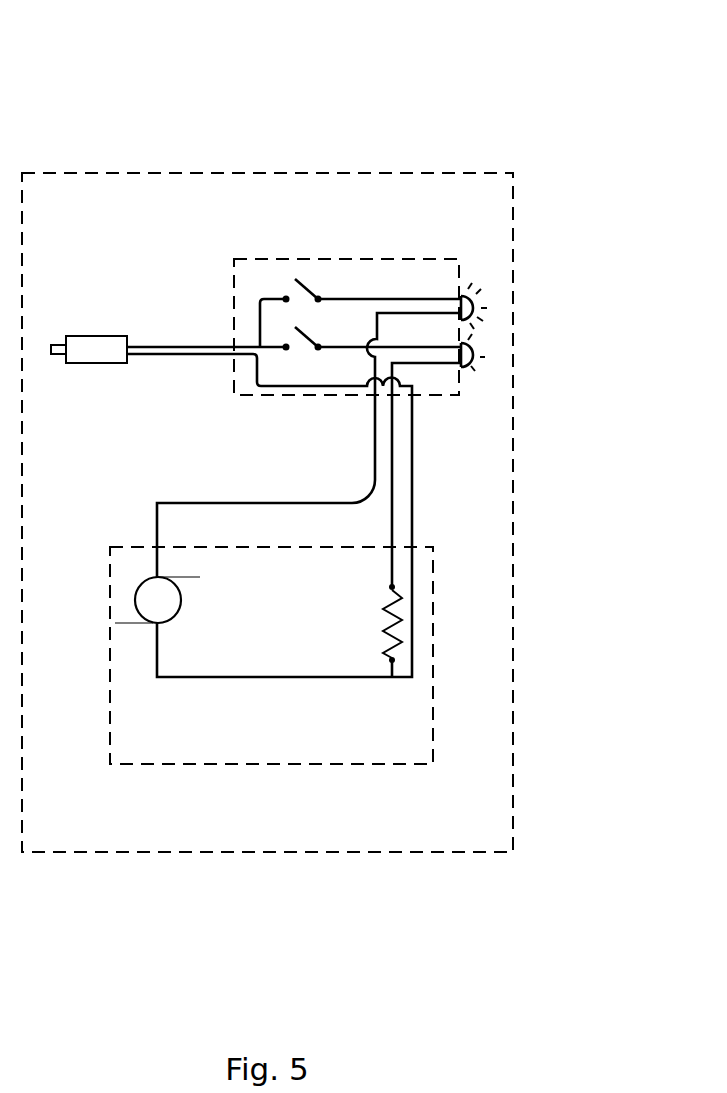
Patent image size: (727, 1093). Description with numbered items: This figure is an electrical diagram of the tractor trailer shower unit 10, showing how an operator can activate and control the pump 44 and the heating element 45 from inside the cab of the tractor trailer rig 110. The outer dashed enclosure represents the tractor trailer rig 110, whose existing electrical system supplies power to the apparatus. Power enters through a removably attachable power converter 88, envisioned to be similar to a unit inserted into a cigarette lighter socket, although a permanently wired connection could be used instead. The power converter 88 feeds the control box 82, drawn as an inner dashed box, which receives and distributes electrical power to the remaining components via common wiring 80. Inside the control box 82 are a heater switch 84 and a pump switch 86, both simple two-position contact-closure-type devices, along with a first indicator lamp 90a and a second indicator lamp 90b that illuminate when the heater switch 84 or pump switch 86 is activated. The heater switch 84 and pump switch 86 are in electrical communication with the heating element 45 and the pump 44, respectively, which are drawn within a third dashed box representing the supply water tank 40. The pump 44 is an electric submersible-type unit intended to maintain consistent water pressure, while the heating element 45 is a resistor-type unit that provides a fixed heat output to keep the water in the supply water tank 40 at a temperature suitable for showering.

The tractor trailer shower unit 10 is at (543, 133).
The supply water tank 40 is at (433, 702).
The pump 44 is at (168, 618).
The heating element 45 is at (398, 615).
The common wiring 80 is at (187, 355).
The control box 82 is at (253, 259).
The heater switch 84 is at (306, 288).
The pump switch 86 is at (307, 333).
The power converter 88 is at (100, 354).
The first indicator lamp 90a is at (470, 303).
The second indicator lamp 90b is at (470, 352).
The tractor trailer rig 110 is at (513, 559).